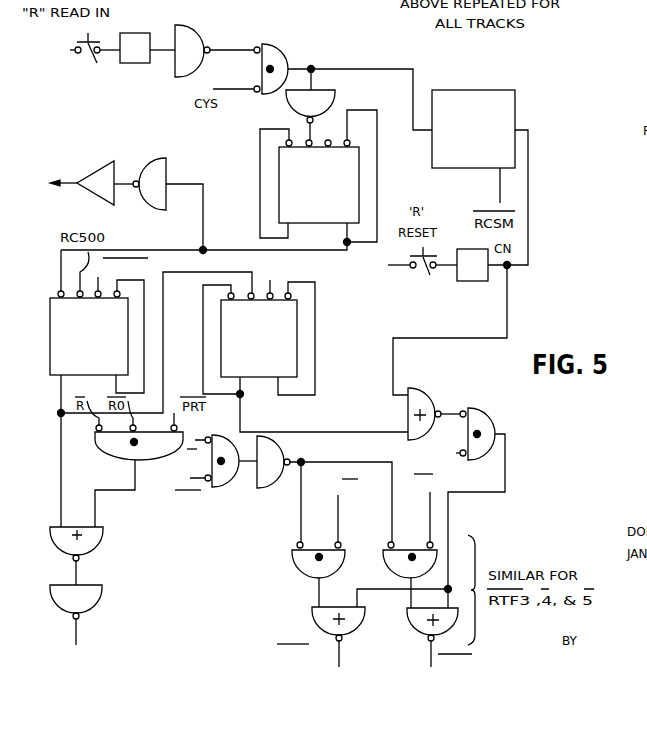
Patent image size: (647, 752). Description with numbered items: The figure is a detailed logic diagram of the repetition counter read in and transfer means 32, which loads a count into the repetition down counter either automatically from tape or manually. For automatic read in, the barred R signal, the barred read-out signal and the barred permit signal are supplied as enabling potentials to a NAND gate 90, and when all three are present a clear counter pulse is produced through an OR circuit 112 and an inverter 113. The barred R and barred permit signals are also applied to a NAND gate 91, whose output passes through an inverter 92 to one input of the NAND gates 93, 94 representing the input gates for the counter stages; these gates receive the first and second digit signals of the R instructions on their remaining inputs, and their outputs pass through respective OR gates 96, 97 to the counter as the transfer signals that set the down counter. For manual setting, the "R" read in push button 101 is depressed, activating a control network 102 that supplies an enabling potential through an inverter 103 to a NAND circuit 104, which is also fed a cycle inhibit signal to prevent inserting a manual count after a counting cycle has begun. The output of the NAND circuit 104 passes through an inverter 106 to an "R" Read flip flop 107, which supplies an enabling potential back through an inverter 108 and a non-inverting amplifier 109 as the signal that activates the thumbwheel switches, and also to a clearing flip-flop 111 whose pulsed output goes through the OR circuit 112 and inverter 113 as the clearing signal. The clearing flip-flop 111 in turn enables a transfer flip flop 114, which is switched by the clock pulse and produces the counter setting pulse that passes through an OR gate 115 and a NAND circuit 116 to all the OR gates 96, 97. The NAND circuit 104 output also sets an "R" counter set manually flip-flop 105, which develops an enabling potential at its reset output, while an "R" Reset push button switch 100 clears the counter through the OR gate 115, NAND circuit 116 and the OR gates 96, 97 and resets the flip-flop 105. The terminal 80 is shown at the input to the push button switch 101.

The read-in input terminal 80 is at (70, 50).
The "R" read in push button 101 is at (87, 56).
The control network 102 is at (149, 66).
The inverter 103 is at (204, 30).
The NAND circuit 104 is at (286, 47).
The "R" counter set manually flip-flop 105 is at (515, 106).
The inverter 106 is at (334, 104).
The "R" Read flip flop 107 is at (279, 178).
The inverter 108 is at (148, 160).
The non-inverting amplifier 109 is at (98, 162).
The "R" Reset push button switch 100 is at (416, 272).
The RTRS flip-flop 111 is at (50, 316).
The RTF flip flop 114 is at (221, 322).
The repetition counter read in and transfer means 32 is at (362, 322).
The OR gate 115 is at (442, 390).
The NAND circuit 116 is at (490, 419).
The NAND gate 90 is at (105, 456).
The NAND gate 91 is at (238, 437).
The inverter 92 is at (262, 490).
The NAND gate 93 is at (292, 553).
The NAND gate 94 is at (384, 553).
The OR gate 96 is at (314, 605).
The OR gate 97 is at (407, 628).
The OR circuit 112 is at (50, 537).
The inverter 113 is at (102, 593).